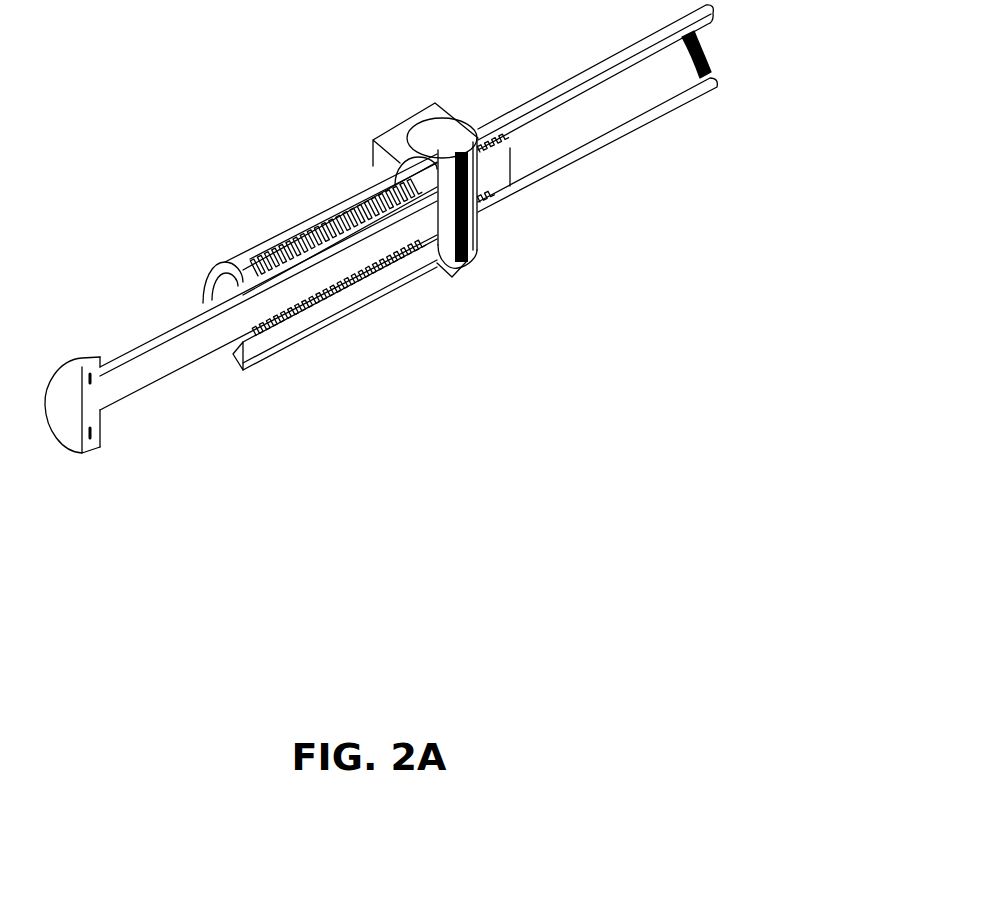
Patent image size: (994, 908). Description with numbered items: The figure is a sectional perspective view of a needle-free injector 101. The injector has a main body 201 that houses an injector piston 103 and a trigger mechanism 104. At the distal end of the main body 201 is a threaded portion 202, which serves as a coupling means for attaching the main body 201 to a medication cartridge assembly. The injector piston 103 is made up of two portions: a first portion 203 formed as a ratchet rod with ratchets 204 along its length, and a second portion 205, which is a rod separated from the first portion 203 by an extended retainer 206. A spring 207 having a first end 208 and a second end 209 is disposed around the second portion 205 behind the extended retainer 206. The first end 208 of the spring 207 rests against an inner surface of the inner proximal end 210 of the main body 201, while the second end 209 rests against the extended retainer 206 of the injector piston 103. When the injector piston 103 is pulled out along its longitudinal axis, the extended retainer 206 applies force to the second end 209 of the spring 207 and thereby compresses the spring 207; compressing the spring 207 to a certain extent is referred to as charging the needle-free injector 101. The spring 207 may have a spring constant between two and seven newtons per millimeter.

The needle-free injector 101 is at (532, 311).
The injector piston 103 is at (173, 397).
The trigger mechanism 104 is at (450, 270).
The main body 201 is at (542, 95).
The threaded portion 202 is at (703, 55).
The first portion 203 is at (493, 175).
The ratchets 204 is at (401, 204).
The second portion 205 is at (120, 355).
The extended retainer 206 is at (324, 231).
The spring 207 is at (270, 268).
The first end 208 is at (260, 345).
The second end 209 is at (330, 298).
The inner proximal end 210 is at (217, 283).